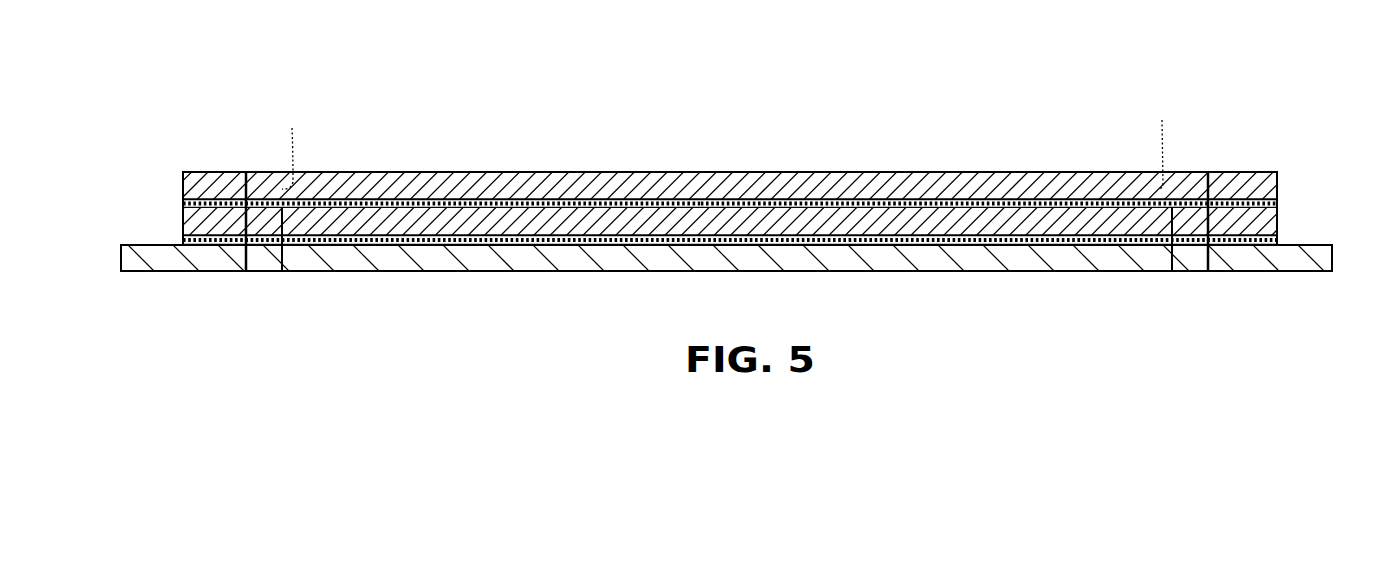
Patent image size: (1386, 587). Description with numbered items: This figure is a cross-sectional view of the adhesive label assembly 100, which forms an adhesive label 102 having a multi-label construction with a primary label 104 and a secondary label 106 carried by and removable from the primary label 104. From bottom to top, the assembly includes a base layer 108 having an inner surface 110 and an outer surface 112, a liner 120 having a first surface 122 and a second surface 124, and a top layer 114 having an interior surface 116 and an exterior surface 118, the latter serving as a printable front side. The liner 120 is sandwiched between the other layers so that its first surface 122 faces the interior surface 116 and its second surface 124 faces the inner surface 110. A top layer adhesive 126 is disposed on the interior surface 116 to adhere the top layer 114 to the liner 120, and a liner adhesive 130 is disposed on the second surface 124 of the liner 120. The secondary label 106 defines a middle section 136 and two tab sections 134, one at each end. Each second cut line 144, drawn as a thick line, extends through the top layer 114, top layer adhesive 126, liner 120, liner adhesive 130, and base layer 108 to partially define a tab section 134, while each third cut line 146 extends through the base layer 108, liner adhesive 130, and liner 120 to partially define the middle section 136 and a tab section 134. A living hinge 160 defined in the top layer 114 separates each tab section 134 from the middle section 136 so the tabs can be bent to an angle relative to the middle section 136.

The adhesive label assembly 100 is at (1283, 160).
The adhesive label 102 is at (1073, 163).
The primary label 104 is at (1288, 179).
The secondary label 106 is at (313, 162).
The base layer 108 is at (125, 258).
The inner surface 110 is at (401, 236).
The outer surface 112 is at (438, 272).
The top layer 114 is at (183, 188).
The interior surface 116 is at (525, 205).
The exterior surface 118 is at (426, 172).
The liner 120 is at (183, 215).
The first surface 122 is at (827, 207).
The second surface 124 is at (1012, 241).
The top layer adhesive 126 is at (1278, 203).
The liner adhesive 130 is at (1278, 240).
The tab section 134 is at (218, 183).
The middle section 136 is at (796, 172).
The second cut line 144 is at (252, 186).
The third cut line 146 is at (283, 261).
The living hinge 160 is at (723, 142).